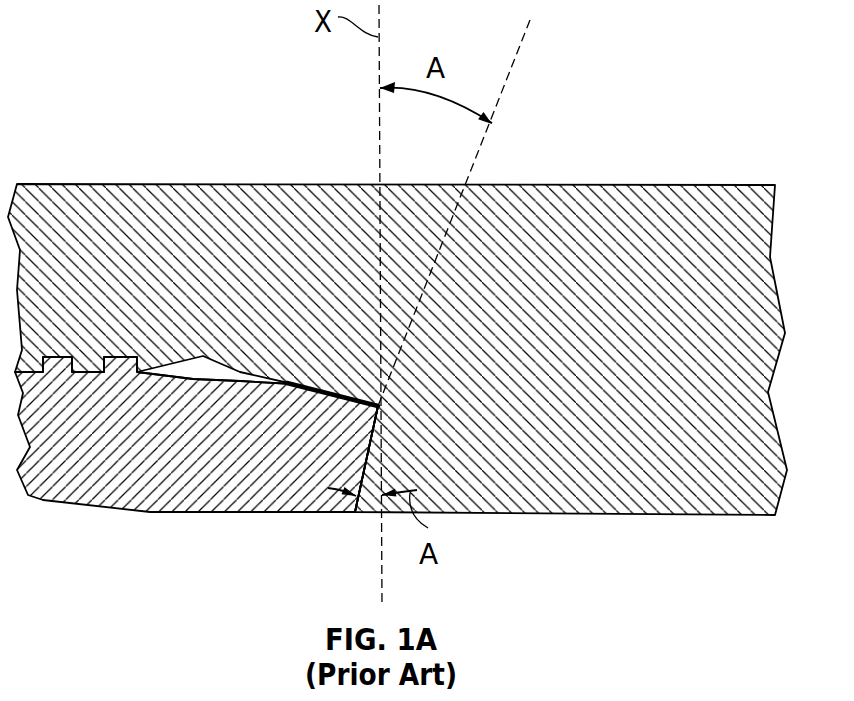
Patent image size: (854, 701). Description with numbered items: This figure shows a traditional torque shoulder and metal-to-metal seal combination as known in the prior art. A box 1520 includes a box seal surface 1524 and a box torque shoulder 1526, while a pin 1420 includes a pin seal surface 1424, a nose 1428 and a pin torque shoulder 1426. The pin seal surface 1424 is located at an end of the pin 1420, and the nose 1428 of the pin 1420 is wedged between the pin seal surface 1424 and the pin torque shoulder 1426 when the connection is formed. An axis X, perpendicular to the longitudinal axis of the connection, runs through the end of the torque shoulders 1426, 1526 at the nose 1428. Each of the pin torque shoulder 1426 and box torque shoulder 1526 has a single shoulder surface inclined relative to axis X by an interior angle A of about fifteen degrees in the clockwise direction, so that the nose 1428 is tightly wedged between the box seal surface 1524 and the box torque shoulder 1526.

The box 1520 is at (83, 198).
The pin 1420 is at (87, 473).
The box seal surface 1524 is at (308, 385).
The pin seal surface 1424 is at (293, 387).
The nose 1428 is at (377, 406).
The pin torque shoulder 1426 is at (365, 475).
The box torque shoulder 1526 is at (367, 477).